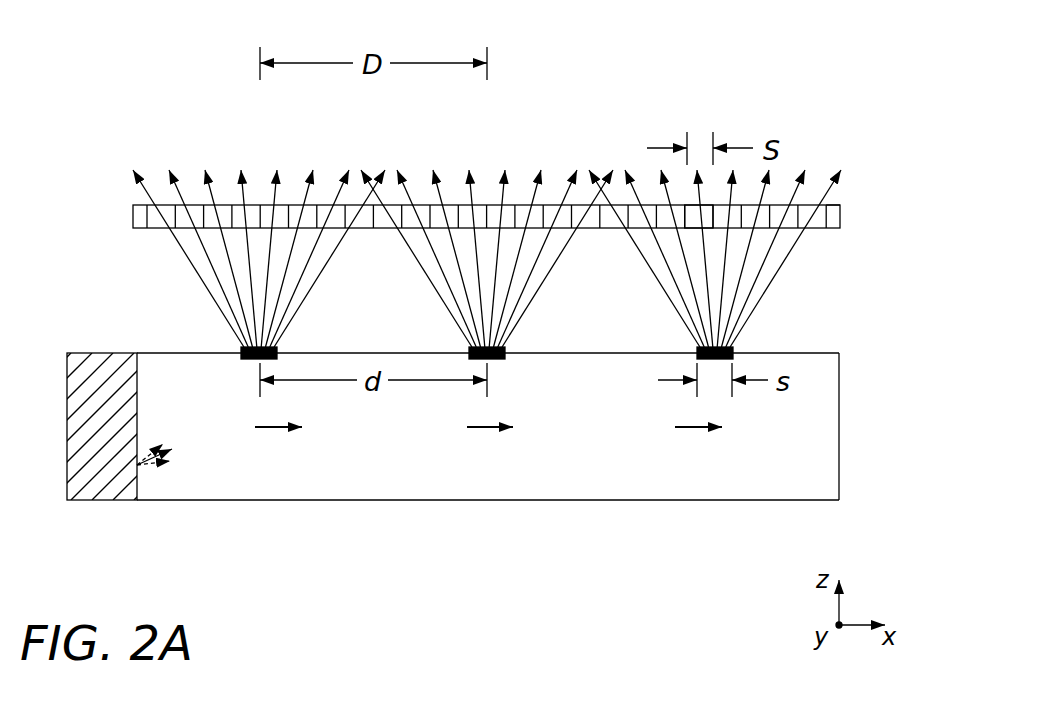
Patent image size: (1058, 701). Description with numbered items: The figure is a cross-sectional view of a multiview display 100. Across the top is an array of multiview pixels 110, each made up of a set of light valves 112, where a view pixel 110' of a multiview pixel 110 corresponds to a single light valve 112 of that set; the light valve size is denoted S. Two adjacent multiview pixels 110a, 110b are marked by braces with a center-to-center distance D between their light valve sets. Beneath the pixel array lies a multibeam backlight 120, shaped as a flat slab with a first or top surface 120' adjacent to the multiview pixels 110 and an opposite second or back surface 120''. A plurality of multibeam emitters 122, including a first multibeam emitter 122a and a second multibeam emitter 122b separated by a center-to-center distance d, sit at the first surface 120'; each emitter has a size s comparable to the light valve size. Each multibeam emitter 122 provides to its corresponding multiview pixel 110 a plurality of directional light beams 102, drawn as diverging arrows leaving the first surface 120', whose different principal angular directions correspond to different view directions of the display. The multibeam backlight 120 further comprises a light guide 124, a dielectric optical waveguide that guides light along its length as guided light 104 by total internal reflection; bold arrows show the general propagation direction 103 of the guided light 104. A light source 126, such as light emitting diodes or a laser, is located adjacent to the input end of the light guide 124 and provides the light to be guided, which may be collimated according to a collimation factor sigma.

The multiview display 100 is at (817, 47).
The multiview pixel 110 is at (463, 207).
The first set of light beams 110a is at (373, 160).
The second set of light beams 110b is at (600, 160).
The view pixel 110' is at (781, 153).
The light valve 112 is at (122, 210).
The directional light beam 102 is at (841, 249).
The propagation direction 103 is at (490, 447).
The guided light 104 is at (168, 470).
The multibeam backlight 120 is at (468, 449).
The first surface 120' is at (529, 334).
The second surface 120'' is at (532, 518).
The multibeam emitter 122 is at (220, 327).
The first multibeam emitter 122a is at (300, 327).
The second multibeam emitter 122b is at (520, 327).
The light guide 124 is at (795, 487).
The light source 126 is at (102, 512).